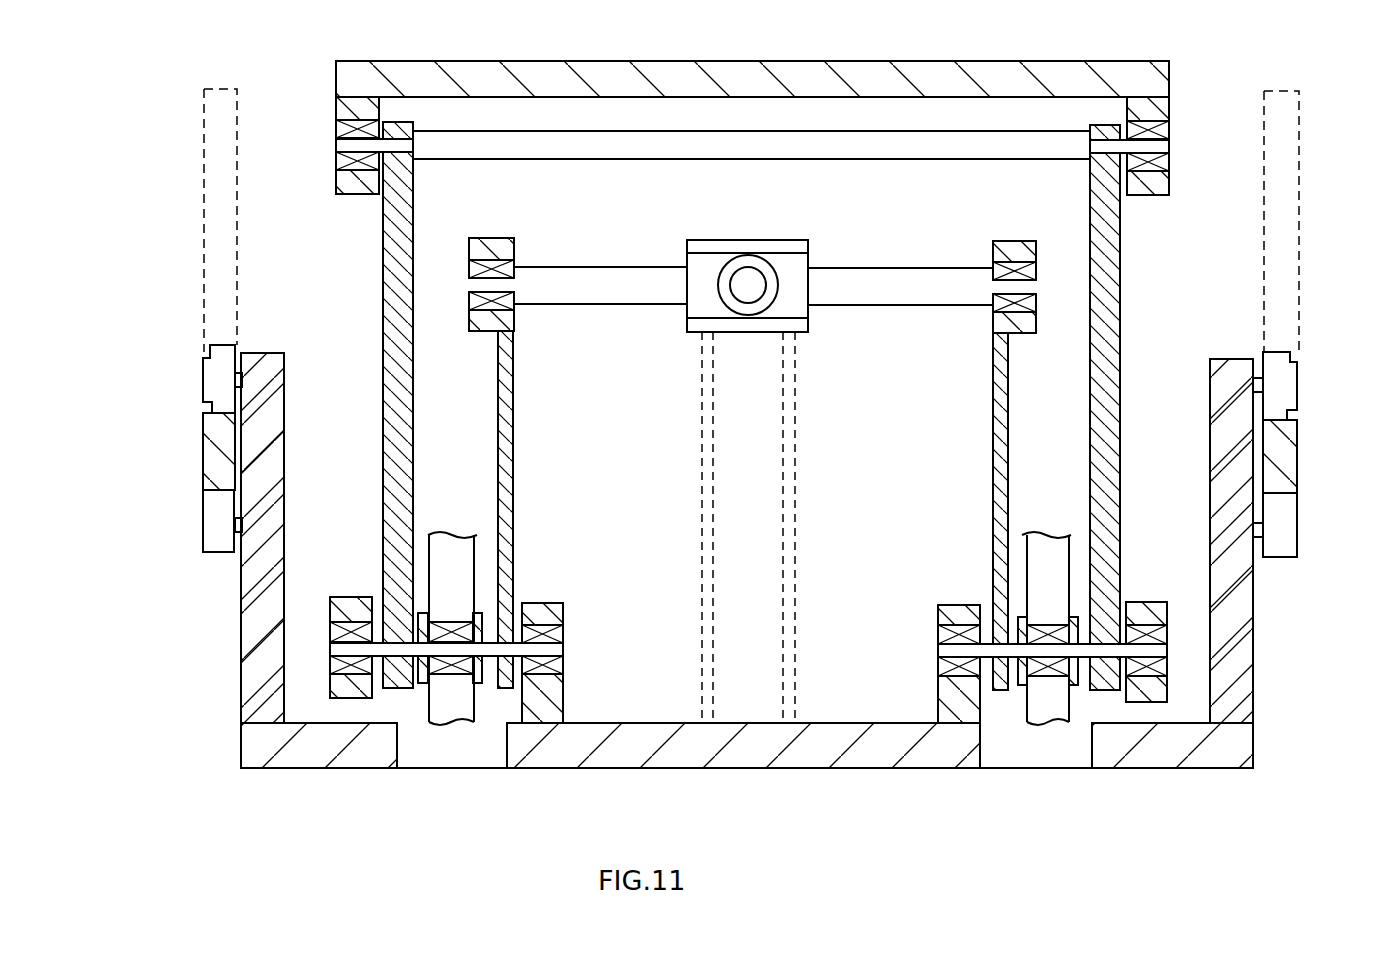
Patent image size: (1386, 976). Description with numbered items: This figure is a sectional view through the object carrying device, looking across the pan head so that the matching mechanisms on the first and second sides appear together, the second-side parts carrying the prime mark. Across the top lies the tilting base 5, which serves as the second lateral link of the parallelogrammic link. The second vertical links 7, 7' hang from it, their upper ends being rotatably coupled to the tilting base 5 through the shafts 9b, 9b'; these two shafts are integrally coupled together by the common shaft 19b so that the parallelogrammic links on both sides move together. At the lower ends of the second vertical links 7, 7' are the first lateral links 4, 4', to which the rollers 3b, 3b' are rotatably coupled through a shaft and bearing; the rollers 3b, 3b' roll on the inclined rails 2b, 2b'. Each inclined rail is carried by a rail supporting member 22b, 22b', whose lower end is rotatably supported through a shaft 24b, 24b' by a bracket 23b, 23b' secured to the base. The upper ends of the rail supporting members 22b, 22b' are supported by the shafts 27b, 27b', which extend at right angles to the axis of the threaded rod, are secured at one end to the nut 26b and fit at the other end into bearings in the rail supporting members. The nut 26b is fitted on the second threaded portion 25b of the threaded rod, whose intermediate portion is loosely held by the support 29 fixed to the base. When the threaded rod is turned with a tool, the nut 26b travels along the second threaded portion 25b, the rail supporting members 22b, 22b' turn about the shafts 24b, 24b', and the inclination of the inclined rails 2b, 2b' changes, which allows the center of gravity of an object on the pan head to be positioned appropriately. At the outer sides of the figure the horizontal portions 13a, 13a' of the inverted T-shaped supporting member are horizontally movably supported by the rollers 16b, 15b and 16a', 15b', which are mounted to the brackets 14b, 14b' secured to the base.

The tilting base 5 is at (870, 75).
The second vertical link 7 is at (1132, 407).
The second vertical link 7' is at (371, 405).
The shaft 9b is at (1164, 146).
The shaft 9b' is at (334, 145).
The common shaft 19b is at (638, 148).
The rail supporting member 22b is at (970, 465).
The rail supporting member 22b' is at (536, 463).
The second threaded portion 25b is at (745, 275).
The nut 26b is at (796, 240).
The shaft 27b is at (900, 262).
The shaft 27b' is at (600, 262).
The support 29 is at (700, 528).
The inclined rail 2b is at (1048, 605).
The inclined rail 2b' is at (450, 605).
The roller 3b is at (1052, 734).
The roller 3b' is at (446, 732).
The first lateral link 4 is at (1146, 622).
The first lateral link 4' is at (351, 626).
The shaft 24b is at (917, 640).
The shaft 24b' is at (588, 638).
The bracket 23b is at (919, 699).
The bracket 23b' is at (585, 698).
The bracket 14b is at (1217, 563).
The bracket 14b' is at (281, 560).
The roller 16b is at (1297, 390).
The roller 16a' is at (182, 310).
The horizontal portion 13a is at (1324, 456).
The horizontal portion 13a' is at (177, 451).
The roller 15b is at (1324, 525).
The roller 15b' is at (176, 521).